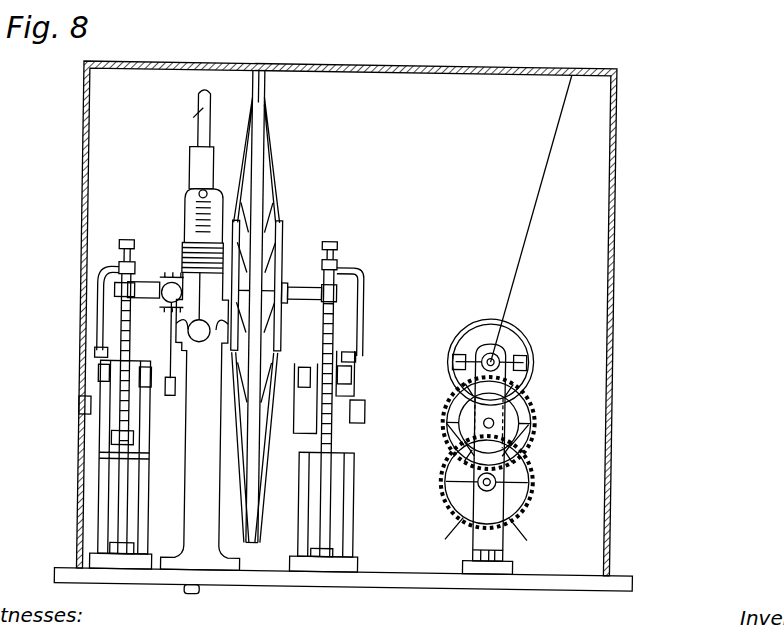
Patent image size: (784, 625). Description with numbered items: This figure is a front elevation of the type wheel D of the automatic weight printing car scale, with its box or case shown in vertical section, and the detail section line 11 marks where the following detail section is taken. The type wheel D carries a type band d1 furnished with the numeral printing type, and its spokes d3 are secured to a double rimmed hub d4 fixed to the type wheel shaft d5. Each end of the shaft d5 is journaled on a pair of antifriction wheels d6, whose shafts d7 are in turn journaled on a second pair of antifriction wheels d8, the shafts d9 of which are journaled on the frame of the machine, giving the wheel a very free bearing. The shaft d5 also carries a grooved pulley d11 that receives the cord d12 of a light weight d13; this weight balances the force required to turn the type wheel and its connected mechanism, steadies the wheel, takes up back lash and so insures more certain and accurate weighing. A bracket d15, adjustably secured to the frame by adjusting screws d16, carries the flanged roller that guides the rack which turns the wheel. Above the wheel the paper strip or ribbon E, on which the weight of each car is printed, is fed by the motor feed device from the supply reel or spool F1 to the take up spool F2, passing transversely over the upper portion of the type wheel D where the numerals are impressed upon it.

The section line 11- 11 is at (229, 606).
The type wheel D is at (266, 536).
The type band d1 is at (266, 87).
The spokes d3 is at (269, 186).
The double rimmed hub d4 is at (284, 223).
The type wheel shaft d5 is at (306, 299).
The antifriction wheels d6 is at (392, 310).
The shafts of antifriction wheels d7 is at (394, 340).
The antifriction wheels d8 is at (395, 362).
The shafts of antifriction wheels d9 is at (395, 385).
The grooved pulley d11 is at (157, 277).
The cord d12 is at (170, 302).
The weight d13 is at (178, 378).
The bracket d15 is at (185, 250).
The adjusting screws d16 is at (205, 322).
The paper strip or ribbon E is at (566, 198).
The supply reel or spool F1 is at (531, 345).
The take up spool F2 is at (522, 427).